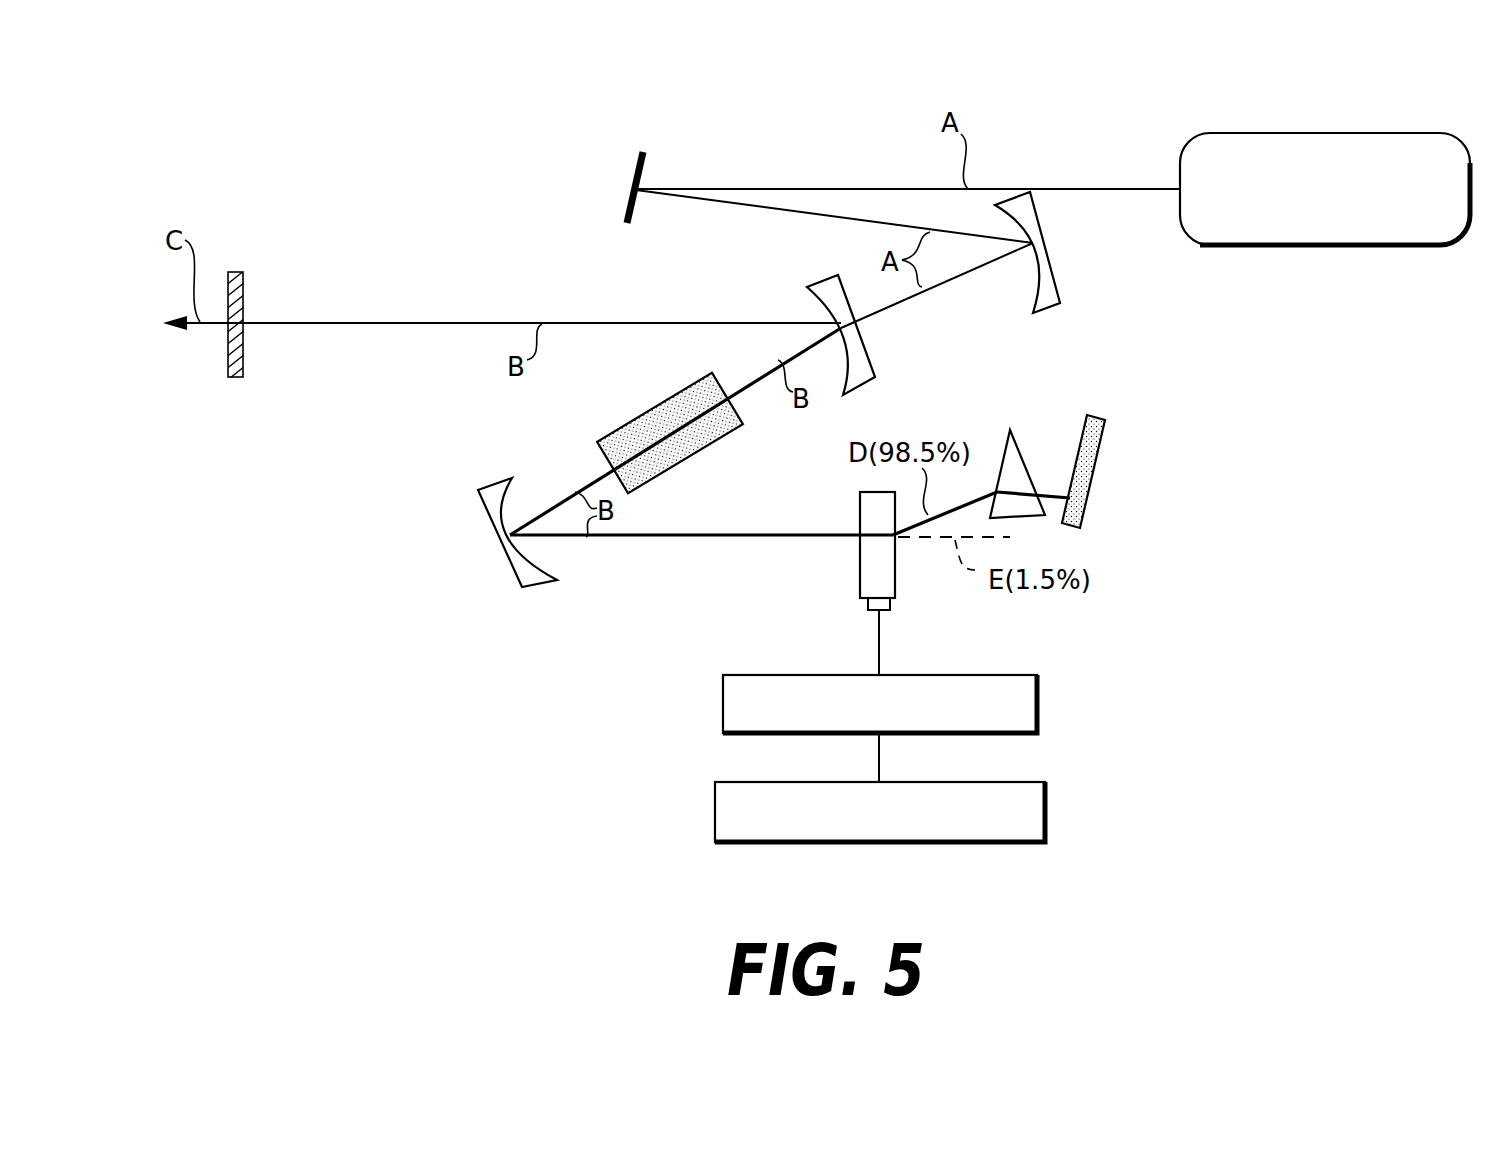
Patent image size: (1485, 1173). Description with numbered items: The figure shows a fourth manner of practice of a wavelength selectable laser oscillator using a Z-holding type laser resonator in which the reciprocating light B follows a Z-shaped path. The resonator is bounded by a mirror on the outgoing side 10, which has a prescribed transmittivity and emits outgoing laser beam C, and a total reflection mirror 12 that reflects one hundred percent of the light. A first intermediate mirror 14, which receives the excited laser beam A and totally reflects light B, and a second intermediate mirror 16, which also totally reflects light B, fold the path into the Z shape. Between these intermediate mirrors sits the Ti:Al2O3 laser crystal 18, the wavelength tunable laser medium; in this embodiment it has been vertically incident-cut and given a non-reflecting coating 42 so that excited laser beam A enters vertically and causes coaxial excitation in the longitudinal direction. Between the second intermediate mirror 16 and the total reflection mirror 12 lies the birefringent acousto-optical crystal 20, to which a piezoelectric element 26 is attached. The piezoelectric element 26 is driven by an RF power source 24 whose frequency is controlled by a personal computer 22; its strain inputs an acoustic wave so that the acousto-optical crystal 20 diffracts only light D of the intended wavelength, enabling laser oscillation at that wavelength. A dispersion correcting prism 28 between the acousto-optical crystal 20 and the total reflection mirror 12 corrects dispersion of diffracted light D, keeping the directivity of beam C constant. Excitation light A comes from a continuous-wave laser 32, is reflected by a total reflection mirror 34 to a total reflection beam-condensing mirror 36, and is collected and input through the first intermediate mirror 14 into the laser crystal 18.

The mirror on the outgoing side 10 is at (235, 378).
The total reflection mirror 12 is at (1097, 475).
The first intermediate mirror 14 is at (877, 356).
The second intermediate mirror 16 is at (520, 586).
The Ti:Al2O3 laser crystal 18 is at (666, 385).
The acousto-optical crystal 20 is at (860, 567).
The personal computer 22 is at (1048, 808).
The RF power source 24 is at (1040, 700).
The piezoelectric element 26 is at (865, 605).
The dispersion correcting prism 28 is at (1020, 455).
The continuous-wave laser 32 is at (1323, 232).
The total reflection mirror 34 is at (630, 183).
The total reflection beam-condensing mirror 36 is at (1062, 292).
The non-reflecting coating 42 is at (597, 440).